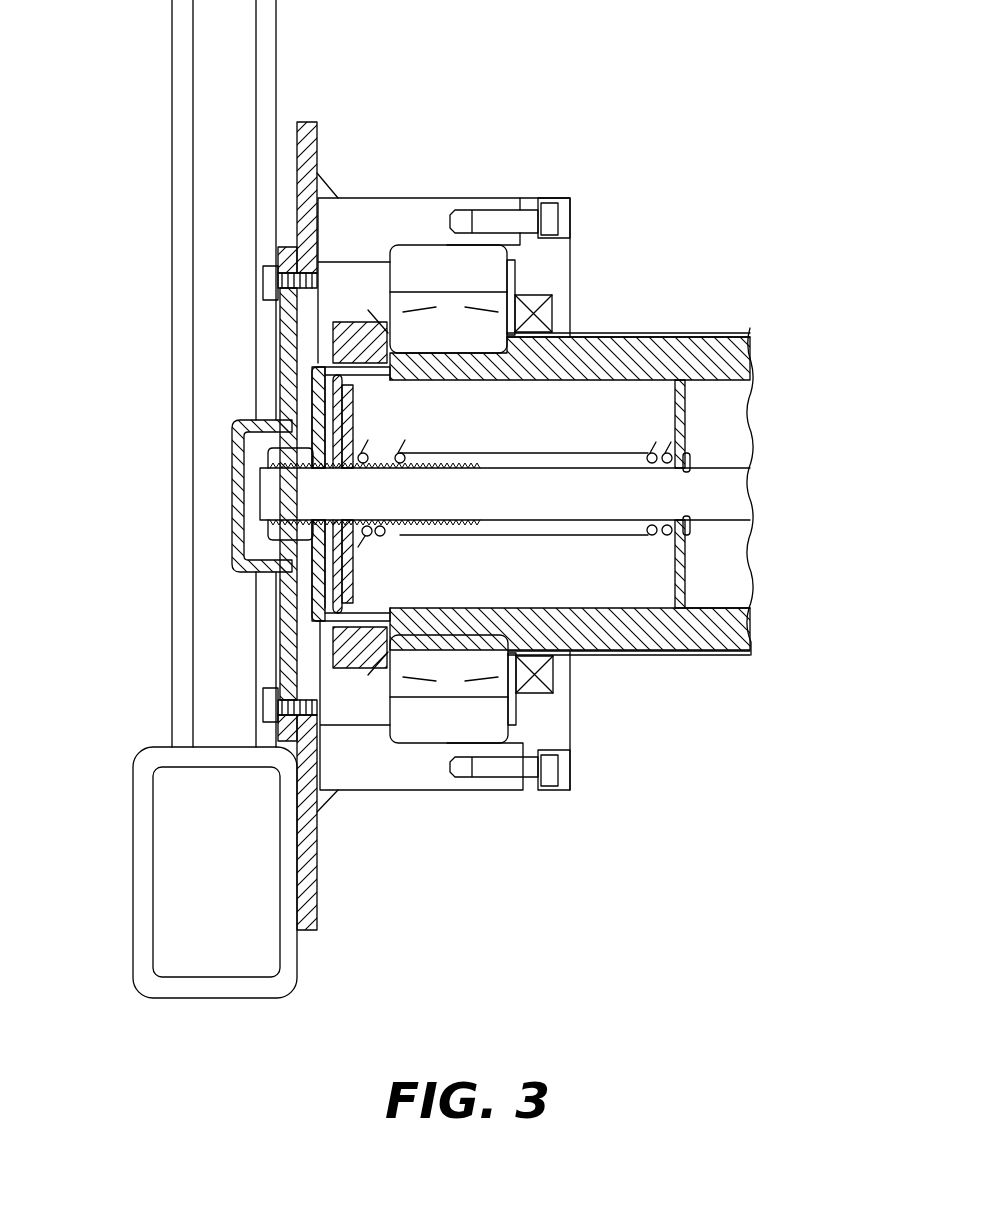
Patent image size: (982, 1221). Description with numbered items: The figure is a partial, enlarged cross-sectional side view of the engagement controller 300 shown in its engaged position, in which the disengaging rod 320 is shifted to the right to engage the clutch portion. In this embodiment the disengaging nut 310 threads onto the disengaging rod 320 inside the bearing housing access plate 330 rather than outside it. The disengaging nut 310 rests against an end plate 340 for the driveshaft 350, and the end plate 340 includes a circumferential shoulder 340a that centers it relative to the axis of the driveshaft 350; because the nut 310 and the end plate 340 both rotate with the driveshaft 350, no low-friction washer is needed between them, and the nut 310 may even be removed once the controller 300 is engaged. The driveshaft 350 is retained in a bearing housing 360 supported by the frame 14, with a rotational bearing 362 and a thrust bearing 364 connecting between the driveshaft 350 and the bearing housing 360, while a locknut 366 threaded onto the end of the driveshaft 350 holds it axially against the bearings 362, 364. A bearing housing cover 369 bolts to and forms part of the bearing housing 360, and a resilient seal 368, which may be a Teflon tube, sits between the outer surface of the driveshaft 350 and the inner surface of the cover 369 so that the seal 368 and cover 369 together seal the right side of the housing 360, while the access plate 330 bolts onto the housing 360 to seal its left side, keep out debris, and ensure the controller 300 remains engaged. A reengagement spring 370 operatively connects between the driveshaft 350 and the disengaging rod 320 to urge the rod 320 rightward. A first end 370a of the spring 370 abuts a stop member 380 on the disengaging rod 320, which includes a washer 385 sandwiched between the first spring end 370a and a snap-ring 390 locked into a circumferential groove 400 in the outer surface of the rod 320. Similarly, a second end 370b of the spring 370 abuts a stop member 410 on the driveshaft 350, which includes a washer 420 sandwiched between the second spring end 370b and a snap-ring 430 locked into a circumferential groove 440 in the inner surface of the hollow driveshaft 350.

The frame 14 is at (172, 340).
The engagement controller 300 is at (146, 440).
The disengaging nut 310 is at (258, 572).
The disengaging rod 320 is at (650, 508).
The bearing housing access plate 330 is at (283, 245).
The end plate 340 is at (280, 636).
The circumferential shoulder 340a is at (328, 627).
The driveshaft 350 is at (682, 652).
The bearing housing 360 is at (380, 198).
The rotational bearing 362 is at (423, 262).
The thrust bearing 364 is at (535, 296).
The locknut 366 is at (347, 322).
The resilient seal 368 is at (582, 336).
The bearing housing cover 369 is at (540, 258).
The reengagement spring 370 is at (556, 453).
The first end of the spring 370a is at (652, 450).
The second end of the spring 370b is at (368, 455).
The stop member 380 is at (667, 560).
The washer 385 is at (698, 417).
The snap-ring 390 is at (692, 532).
The circumferential groove 400 is at (692, 512).
The stop member 410 is at (357, 412).
The washer 420 is at (358, 551).
The snap-ring 430 is at (358, 581).
The circumferential groove 440 is at (354, 593).